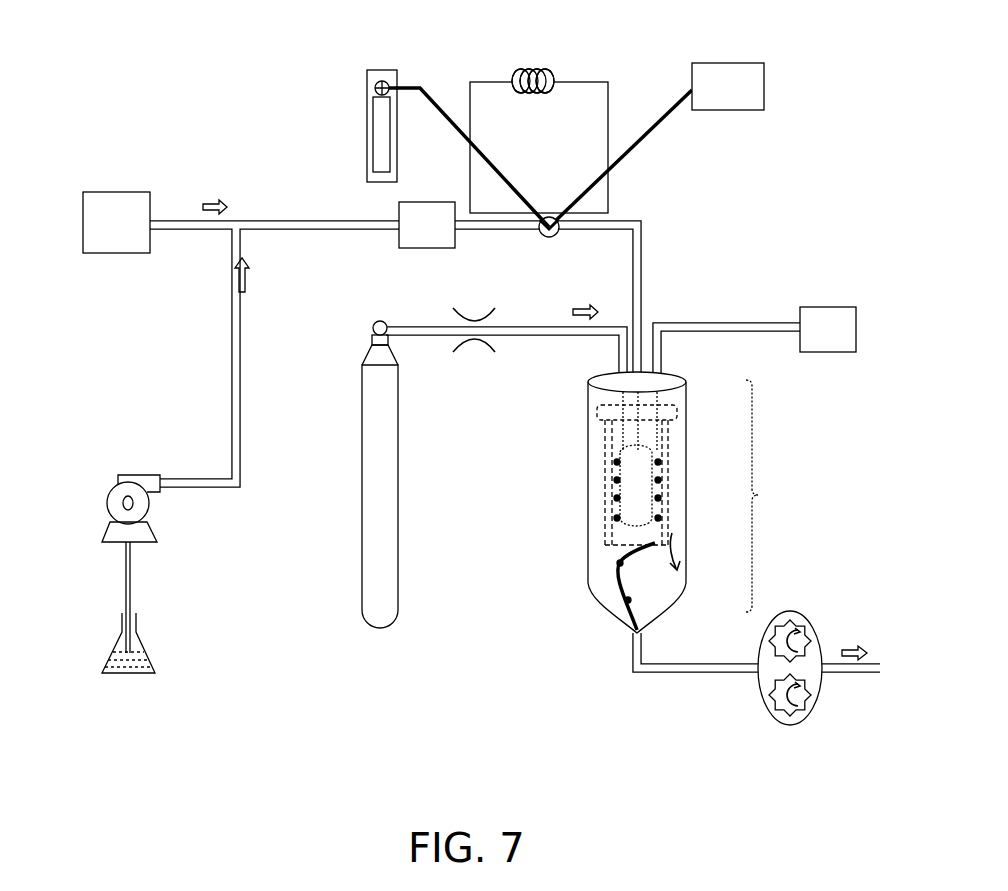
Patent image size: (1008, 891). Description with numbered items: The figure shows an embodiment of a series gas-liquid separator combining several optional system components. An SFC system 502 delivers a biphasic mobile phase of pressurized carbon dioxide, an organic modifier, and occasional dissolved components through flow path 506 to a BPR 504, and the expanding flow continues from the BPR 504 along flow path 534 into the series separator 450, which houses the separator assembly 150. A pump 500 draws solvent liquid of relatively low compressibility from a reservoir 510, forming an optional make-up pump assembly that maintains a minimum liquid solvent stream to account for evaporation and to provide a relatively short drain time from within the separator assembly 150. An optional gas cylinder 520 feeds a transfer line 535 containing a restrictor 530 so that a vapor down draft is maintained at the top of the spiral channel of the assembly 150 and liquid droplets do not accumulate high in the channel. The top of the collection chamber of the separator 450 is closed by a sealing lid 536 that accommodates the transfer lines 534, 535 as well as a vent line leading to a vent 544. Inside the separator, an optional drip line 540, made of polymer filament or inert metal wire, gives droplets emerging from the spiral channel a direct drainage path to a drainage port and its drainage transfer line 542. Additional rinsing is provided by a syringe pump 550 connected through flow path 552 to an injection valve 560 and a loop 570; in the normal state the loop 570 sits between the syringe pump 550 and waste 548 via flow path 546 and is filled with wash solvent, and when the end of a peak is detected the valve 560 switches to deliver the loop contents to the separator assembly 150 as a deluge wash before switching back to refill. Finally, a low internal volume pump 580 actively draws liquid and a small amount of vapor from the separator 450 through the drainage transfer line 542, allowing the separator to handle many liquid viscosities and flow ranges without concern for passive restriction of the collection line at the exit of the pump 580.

The pump 500 is at (108, 500).
The SFC system 502 is at (119, 192).
The BPR 504 is at (415, 248).
The flow path 506 is at (275, 220).
The reservoir 510 is at (136, 620).
The gas cylinder 520 is at (398, 508).
The restrictor 530 is at (472, 340).
The flow path 534 is at (642, 245).
The transfer line 535 is at (546, 336).
The sealing lid 536 is at (683, 370).
The drip line 540 is at (620, 562).
The drainage transfer line 542 is at (634, 665).
The vent 544 is at (834, 307).
The flow path 546 is at (718, 325).
The waste 548 is at (730, 63).
The syringe pump 550 is at (388, 70).
The flow path 552 is at (436, 106).
The injection valve 560 is at (548, 238).
The loop 570 is at (536, 70).
The pump 580 is at (815, 628).
The series separator 450 is at (772, 496).
The separator assembly 150 is at (670, 527).